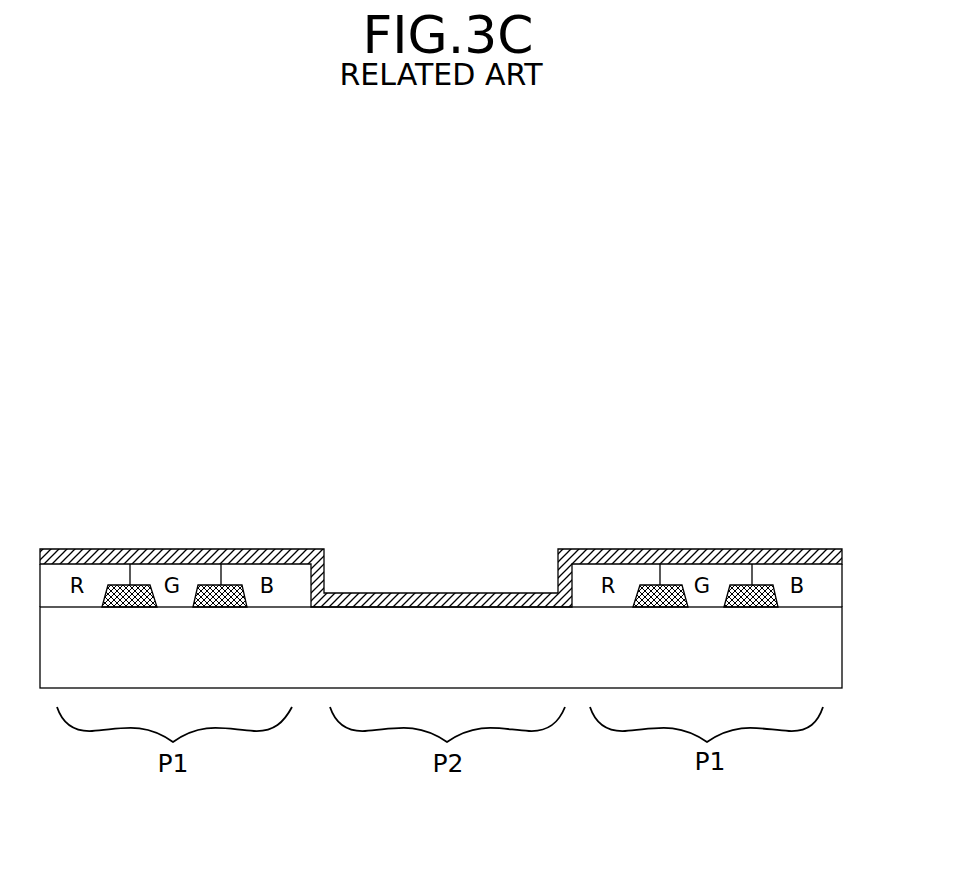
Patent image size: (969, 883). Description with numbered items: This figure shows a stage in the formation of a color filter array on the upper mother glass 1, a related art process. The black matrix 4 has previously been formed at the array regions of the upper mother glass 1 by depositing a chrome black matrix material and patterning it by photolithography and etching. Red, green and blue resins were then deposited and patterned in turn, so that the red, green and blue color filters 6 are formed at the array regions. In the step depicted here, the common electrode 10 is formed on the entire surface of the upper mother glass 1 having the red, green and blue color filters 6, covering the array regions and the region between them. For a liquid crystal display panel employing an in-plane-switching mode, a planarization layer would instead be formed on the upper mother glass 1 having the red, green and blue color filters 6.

The upper mother glass 1 is at (840, 650).
The black matrix 4 is at (770, 607).
The red, green and blue color filters 6 is at (838, 590).
The common electrode 10 is at (844, 550).